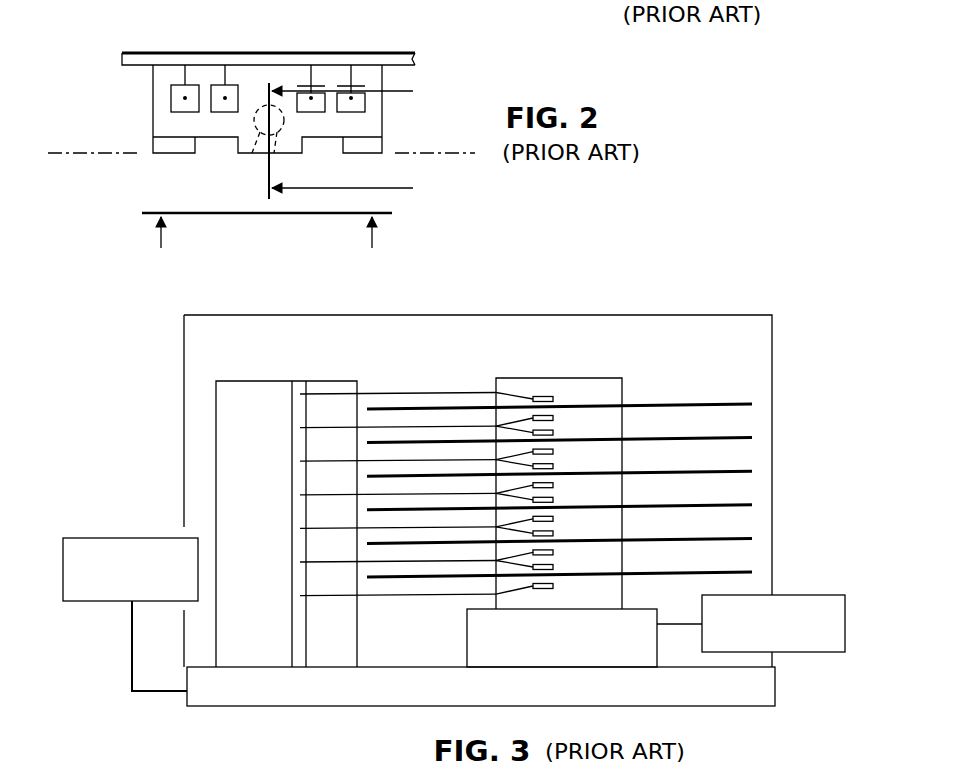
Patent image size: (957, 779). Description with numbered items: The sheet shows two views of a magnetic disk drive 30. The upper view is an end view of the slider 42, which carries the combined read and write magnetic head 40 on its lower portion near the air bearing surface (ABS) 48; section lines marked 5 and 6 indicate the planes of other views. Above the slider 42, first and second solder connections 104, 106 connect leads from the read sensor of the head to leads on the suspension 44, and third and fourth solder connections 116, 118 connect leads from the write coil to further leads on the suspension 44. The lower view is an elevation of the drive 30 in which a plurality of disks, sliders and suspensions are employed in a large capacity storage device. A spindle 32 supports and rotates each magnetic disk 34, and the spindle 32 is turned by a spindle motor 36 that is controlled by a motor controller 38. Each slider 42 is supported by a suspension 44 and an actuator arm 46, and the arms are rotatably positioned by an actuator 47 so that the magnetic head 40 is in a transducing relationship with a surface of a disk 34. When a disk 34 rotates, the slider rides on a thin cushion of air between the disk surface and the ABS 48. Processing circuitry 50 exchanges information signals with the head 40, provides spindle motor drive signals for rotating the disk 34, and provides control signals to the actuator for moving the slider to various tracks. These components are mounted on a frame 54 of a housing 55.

In FIG. 2, the first solder connection 104 is at (169, 87).
In FIG. 2, the third solder connection 116 is at (209, 87).
In FIG. 2, the fourth solder connection 118 is at (294, 86).
In FIG. 2, the second solder connection 106 is at (334, 86).
In FIG. 2, the slider 42 is at (152, 96).
In FIG. 3, the slider 42 is at (554, 419).
In FIG. 2, the magnetic head 40 is at (255, 153).
In FIG. 2, the air bearing surface (ABS) 48 is at (75, 160).
In FIG. 2, the section line 6 is at (352, 140).
In FIG. 2, the section line 5 is at (267, 247).
In FIG. 3, the magnetic disk drive 30 is at (670, 376).
In FIG. 3, the housing 55 is at (684, 313).
In FIG. 3, the actuator 47 is at (245, 380).
In FIG. 3, the actuator arm 46 is at (467, 426).
In FIG. 3, the suspension 44 is at (524, 427).
In FIG. 3, the spindle 32 is at (609, 377).
In FIG. 3, the magnetic disk 34 is at (742, 405).
In FIG. 3, the spindle motor 36 is at (552, 647).
In FIG. 3, the motor controller 38 is at (808, 652).
In FIG. 3, the processing circuitry 50 is at (103, 538).
In FIG. 3, the frame 54 is at (238, 708).